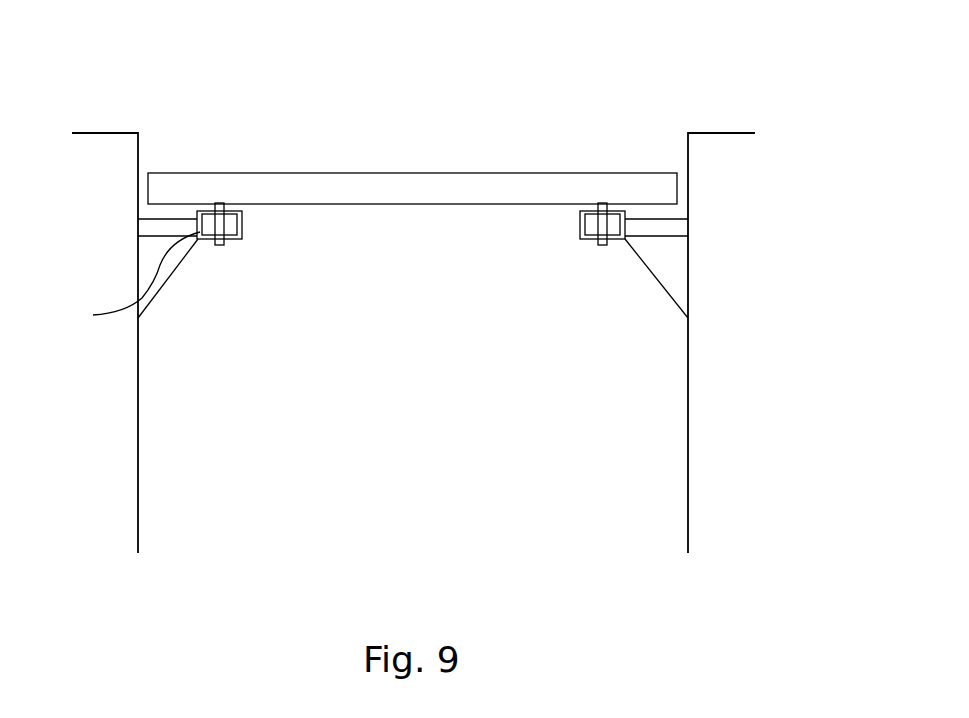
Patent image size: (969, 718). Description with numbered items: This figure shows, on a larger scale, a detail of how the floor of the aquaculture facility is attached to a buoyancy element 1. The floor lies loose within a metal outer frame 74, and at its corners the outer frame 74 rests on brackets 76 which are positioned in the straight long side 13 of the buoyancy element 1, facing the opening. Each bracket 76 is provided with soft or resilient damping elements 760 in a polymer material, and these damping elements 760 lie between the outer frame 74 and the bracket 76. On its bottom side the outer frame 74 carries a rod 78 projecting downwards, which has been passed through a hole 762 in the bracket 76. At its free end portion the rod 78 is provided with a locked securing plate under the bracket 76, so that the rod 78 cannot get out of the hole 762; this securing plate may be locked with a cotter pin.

The buoyancy element 1 is at (82, 110).
The straight long side 13 is at (138, 440).
The outer frame 74 is at (520, 190).
The bracket 76 is at (675, 227).
The damping element 760 is at (613, 228).
The hole 762 is at (627, 240).
The rod 78 is at (123, 280).